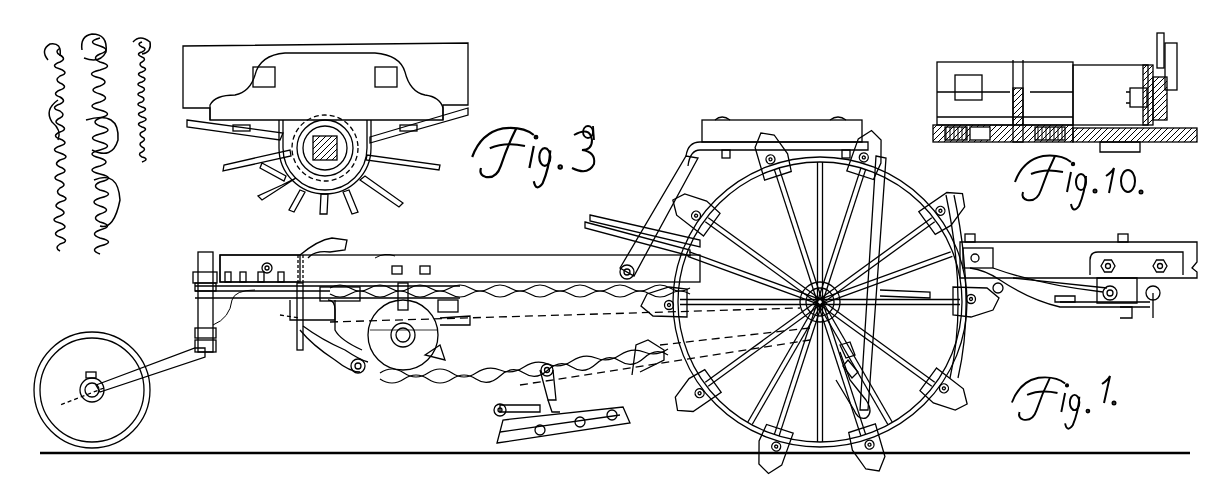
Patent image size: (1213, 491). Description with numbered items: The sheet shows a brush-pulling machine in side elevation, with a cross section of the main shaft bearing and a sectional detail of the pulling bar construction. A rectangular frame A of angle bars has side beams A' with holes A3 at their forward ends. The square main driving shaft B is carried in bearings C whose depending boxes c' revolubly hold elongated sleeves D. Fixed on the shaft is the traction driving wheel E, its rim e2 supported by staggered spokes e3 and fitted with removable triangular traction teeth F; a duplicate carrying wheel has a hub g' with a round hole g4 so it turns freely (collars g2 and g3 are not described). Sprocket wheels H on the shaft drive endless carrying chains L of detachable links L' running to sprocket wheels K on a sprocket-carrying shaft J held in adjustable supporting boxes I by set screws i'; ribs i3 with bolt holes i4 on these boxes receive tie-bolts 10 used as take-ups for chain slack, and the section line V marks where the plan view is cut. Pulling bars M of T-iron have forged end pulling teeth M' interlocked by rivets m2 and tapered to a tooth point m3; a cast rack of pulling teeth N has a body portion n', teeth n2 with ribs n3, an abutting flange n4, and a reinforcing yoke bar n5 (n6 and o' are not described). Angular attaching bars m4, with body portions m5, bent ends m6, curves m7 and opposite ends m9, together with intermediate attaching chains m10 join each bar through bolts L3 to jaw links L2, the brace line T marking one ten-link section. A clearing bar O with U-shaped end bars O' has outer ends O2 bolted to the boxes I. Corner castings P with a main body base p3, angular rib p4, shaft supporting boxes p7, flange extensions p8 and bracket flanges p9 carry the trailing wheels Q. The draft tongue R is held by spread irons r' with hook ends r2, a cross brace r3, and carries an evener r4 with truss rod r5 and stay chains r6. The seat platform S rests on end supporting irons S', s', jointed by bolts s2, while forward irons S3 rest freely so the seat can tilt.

In FIG. 1, the frame A is at (460, 257).
In FIG. 3A, the side beams A' is at (344, 81).
In FIG. 1, the side beams A' is at (701, 302).
In FIG. 1, the holes A3 is at (892, 272).
In FIG. 3A, the main traction-wheel axle or driving shaft B is at (300, 148).
In FIG. 1, the main traction-wheel axle or driving shaft B is at (820, 280).
In FIG. 3A, the bearings C is at (330, 70).
In FIG. 3A, the depending boxes c' is at (327, 131).
In FIG. 3A, the elongated sleeves D is at (290, 165).
In FIG. 1, the main traction driving wheel E is at (961, 286).
In FIG. 1, the rim e2 is at (922, 410).
In FIG. 1, the spokes e3 is at (775, 205).
In FIG. 1, the traction teeth F is at (882, 162).
In FIG. 3A, the hub g' is at (384, 170).
In FIG. 1, the hub g' is at (132, 376).
In FIG. 1, the post collar g2 is at (205, 262).
In FIG. 3A, the caster hub g3 is at (362, 185).
In FIG. 1, the caster hub g3 is at (92, 395).
In FIG. 1, the round hole g4 is at (200, 272).
In FIG. 1, the sprocket wheels H is at (800, 310).
In FIG. 1, the shaft-supporting boxes I is at (445, 280).
In FIG. 1, the set screws i' is at (395, 342).
In FIG. 1, the vertical ribs i3 is at (415, 282).
In FIG. 1, the bolt hole i4 is at (392, 282).
In FIG. 1, the sprocket-carrying shaft J is at (405, 348).
In FIG. 1, the sprocket wheels K is at (437, 358).
In FIG. 1, the endless carrying chain L is at (524, 356).
In FIG. 1, the detachable links L' is at (510, 343).
In FIG. 1, the joint-pin jaw links L2 is at (548, 362).
In FIG. 1, the bolt L3 is at (655, 372).
In FIG. 10, the pulling bars M is at (1110, 79).
In FIG. 1, the pulling bars M is at (447, 355).
In FIG. 10, the end pulling teeth M' is at (1135, 117).
In FIG. 1, the end pulling teeth M' is at (580, 319).
In FIG. 10, the rivets m2 is at (1128, 104).
In FIG. 1, the tooth point m3 is at (297, 340).
In FIG. 10, the attaching bars m4 is at (1172, 135).
In FIG. 1, the attaching bars m4 is at (580, 430).
In FIG. 1, the angular body portions m5 is at (345, 368).
In FIG. 1, the ends m6 is at (362, 378).
In FIG. 1, the curves m7 is at (358, 375).
In FIG. 1, the opposite ends m9 is at (322, 248).
In FIG. 10, the intermediate attaching chains m10 is at (1158, 42).
In FIG. 1, the intermediate attaching chains m10 is at (380, 258).
In FIG. 10, the rack of pulling teeth N is at (968, 62).
In FIG. 1, the rack of pulling teeth N is at (842, 370).
In FIG. 10, the body portion n' is at (943, 87).
In FIG. 10, the pulling teeth n2 is at (1018, 138).
In FIG. 10, the angular rib n3 is at (1012, 76).
In FIG. 10, the abutting flange n4 is at (982, 138).
In FIG. 1, the reinforcing yoke bar n5 is at (505, 405).
In FIG. 1, the link n6 is at (342, 279).
In FIG. 1, the clearing bar O is at (331, 363).
In FIG. 1, the end bars O' is at (282, 326).
In FIG. 1, the outer ends O2 is at (448, 318).
In FIG. 1, the rod o' is at (465, 310).
In FIG. 1, the corner castings P is at (191, 302).
In FIG. 1, the main body base p3 is at (256, 262).
In FIG. 1, the angular rib p4 is at (255, 290).
In FIG. 1, the shaft supporting boxes p7 is at (198, 300).
In FIG. 1, the flange extensions p8 is at (195, 286).
In FIG. 1, the bracket flanges p9 is at (238, 322).
In FIG. 1, the trailing wheels Q is at (138, 420).
In FIG. 1, the draft tongue R is at (1152, 245).
In FIG. 1, the spread irons r' is at (1086, 234).
In FIG. 1, the hook ends r2 is at (908, 280).
In FIG. 1, the cross brace r3 is at (980, 280).
In FIG. 1, the evener r4 is at (1118, 310).
In FIG. 1, the truss rod r5 is at (1078, 304).
In FIG. 1, the stay chains r6 is at (1025, 278).
In FIG. 1, the seat platform S is at (782, 117).
In FIG. 1, the end supporting irons S' is at (744, 209).
In FIG. 1, the end supporting irons s' is at (786, 131).
In FIG. 1, the bolts s2 is at (616, 273).
In FIG. 1, the forward irons S3 is at (885, 215).
In FIG. 1, the brace line T is at (532, 376).
In FIG. 1, the section line V is at (613, 330).
In FIG. 1, the tie-bolts 10 is at (327, 293).